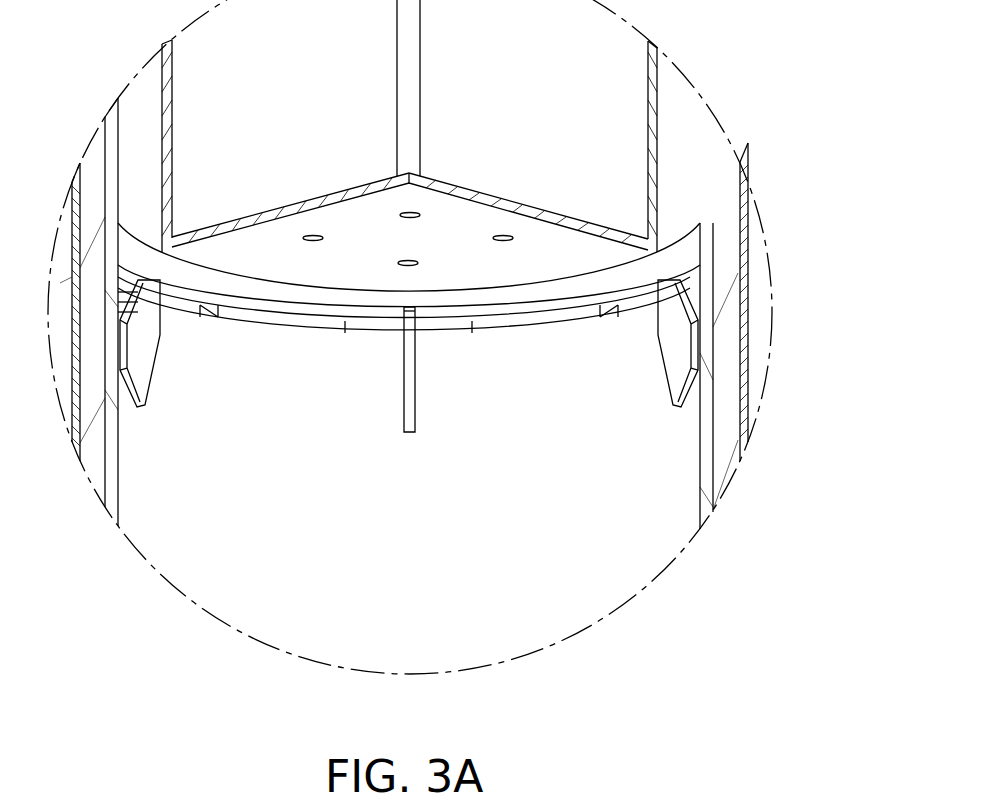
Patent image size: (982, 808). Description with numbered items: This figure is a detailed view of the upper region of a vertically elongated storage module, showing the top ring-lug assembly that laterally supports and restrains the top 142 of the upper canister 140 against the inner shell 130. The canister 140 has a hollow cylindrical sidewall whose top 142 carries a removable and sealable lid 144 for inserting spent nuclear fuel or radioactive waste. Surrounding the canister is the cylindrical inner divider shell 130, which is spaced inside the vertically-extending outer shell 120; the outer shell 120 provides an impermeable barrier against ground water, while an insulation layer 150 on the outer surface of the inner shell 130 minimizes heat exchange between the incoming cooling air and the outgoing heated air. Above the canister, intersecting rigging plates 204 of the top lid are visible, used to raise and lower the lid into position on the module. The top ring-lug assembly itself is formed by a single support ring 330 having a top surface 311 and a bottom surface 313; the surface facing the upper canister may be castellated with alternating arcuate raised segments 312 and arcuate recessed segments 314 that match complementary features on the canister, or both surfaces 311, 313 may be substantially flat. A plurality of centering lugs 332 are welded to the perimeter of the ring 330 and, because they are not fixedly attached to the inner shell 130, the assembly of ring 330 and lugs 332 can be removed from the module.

The outer shell 120 is at (750, 372).
The inner shell 130 is at (700, 453).
The canister 140 is at (425, 510).
The top 142 is at (240, 327).
The lid 144 is at (483, 222).
The insulation layer 150 is at (707, 417).
The rigging plate 204 is at (295, 90).
The top surface 311 is at (307, 317).
The arcuate raised segment 312 is at (456, 336).
The bottom surface 313 is at (238, 284).
The arcuate recessed segment 314 is at (333, 317).
The support ring 330 is at (545, 300).
The centering lug 332 is at (660, 362).